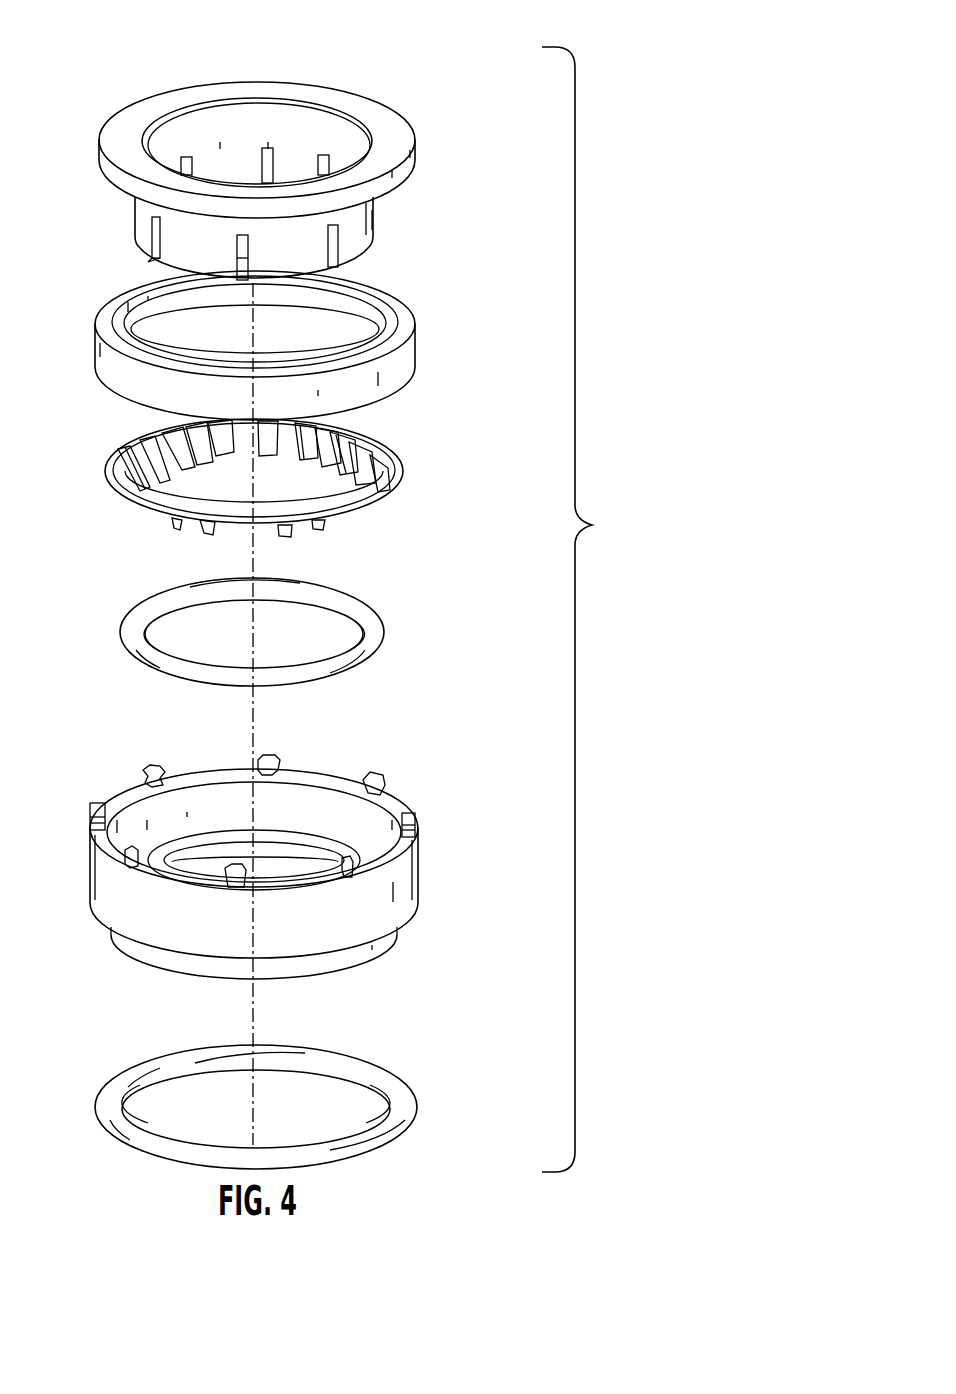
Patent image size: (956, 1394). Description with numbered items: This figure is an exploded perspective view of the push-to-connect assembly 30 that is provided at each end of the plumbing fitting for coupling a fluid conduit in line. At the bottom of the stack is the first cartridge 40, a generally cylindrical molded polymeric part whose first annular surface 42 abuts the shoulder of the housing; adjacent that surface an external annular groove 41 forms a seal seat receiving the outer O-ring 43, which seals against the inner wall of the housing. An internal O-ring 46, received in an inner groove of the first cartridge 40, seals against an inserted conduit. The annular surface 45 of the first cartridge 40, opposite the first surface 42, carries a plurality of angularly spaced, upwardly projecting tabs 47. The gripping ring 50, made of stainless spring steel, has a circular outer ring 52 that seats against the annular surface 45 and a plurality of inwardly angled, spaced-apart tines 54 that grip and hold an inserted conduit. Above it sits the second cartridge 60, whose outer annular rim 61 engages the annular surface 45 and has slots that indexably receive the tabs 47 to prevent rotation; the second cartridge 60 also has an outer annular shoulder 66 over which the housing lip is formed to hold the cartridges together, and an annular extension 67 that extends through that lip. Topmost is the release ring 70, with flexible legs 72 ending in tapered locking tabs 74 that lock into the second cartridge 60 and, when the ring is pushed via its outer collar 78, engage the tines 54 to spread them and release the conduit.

The push-to-connect assembly 30 is at (581, 609).
The first cartridge 40 is at (290, 873).
The external annular groove 41 is at (417, 925).
The first annular surface 42 is at (330, 972).
The outer O-ring 43 is at (385, 1072).
The annular surface 45 is at (323, 780).
The internal O-ring 46 is at (378, 631).
The tabs 47 is at (148, 767).
The gripping ring 50 is at (301, 460).
The outer ring 52 is at (401, 462).
The tines 54 is at (343, 423).
The second cartridge 60 is at (305, 321).
The outer annular rim 61 is at (422, 316).
The outer annular shoulder 66 is at (405, 308).
The annular extension 67 is at (370, 288).
The release ring 70 is at (272, 141).
The legs 72 is at (365, 215).
The locking tabs 74 is at (150, 262).
The outer collar 78 is at (403, 117).